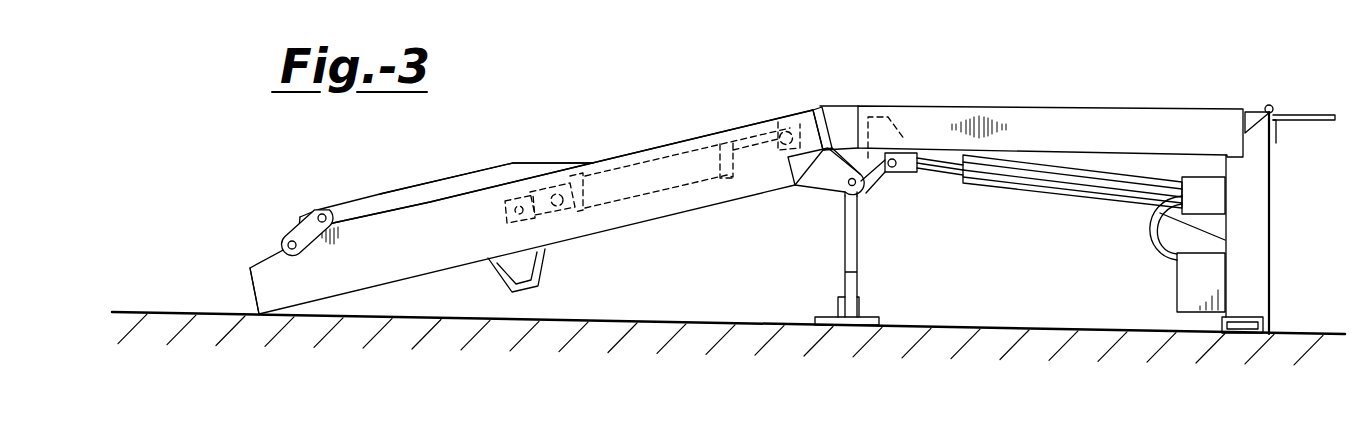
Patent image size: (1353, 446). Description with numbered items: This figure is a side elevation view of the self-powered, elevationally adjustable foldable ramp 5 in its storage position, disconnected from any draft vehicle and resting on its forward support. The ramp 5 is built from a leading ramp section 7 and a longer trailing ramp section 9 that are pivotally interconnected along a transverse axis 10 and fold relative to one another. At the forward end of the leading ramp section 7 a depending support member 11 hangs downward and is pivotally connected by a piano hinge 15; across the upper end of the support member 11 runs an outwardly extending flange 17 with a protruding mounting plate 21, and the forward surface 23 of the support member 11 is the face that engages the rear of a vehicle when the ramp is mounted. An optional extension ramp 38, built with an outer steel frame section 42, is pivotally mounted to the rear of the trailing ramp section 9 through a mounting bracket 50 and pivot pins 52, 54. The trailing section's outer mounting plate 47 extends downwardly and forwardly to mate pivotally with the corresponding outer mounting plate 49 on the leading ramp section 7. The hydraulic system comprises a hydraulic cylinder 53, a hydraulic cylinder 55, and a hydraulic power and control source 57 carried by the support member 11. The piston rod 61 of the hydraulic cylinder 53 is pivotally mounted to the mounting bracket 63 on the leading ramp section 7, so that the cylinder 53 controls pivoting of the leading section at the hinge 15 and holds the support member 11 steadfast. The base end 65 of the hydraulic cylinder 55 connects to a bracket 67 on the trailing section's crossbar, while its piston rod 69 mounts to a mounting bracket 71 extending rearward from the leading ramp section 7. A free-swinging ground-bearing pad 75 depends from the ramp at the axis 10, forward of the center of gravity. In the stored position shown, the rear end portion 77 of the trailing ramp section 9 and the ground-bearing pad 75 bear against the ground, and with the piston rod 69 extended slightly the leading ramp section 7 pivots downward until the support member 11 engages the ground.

The foldable ramp 5 is at (692, 122).
The leading ramp section 7 is at (1017, 104).
The trailing ramp section 9 is at (643, 150).
The transverse axis 10 is at (848, 186).
The support member 11 is at (1253, 297).
The piano hinge 15 is at (1269, 104).
The flange 17 is at (1288, 122).
The mounting plate 21 is at (1315, 115).
The forward surface 23 is at (1271, 250).
The extension ramp 38 is at (402, 185).
The outer steel frame section 42 is at (455, 186).
The outer mounting plate 47 is at (800, 190).
The outer mounting plate 49 is at (872, 168).
The mounting bracket 50 is at (296, 228).
The pivot pin 52 is at (283, 246).
The hydraulic cylinder 53 is at (1077, 197).
The pivot pin 54 is at (319, 214).
The hydraulic cylinder 55 is at (655, 193).
The hydraulic power and control source 57 is at (1177, 294).
The piston rod 61 is at (958, 178).
The mounting bracket 63 is at (910, 175).
The base end 65 is at (560, 210).
The bracket 67 is at (550, 217).
The piston rod 69 is at (772, 124).
The mounting bracket 71 is at (835, 104).
The ground-bearing pad 75 is at (857, 266).
The rear end portion 77 is at (258, 313).